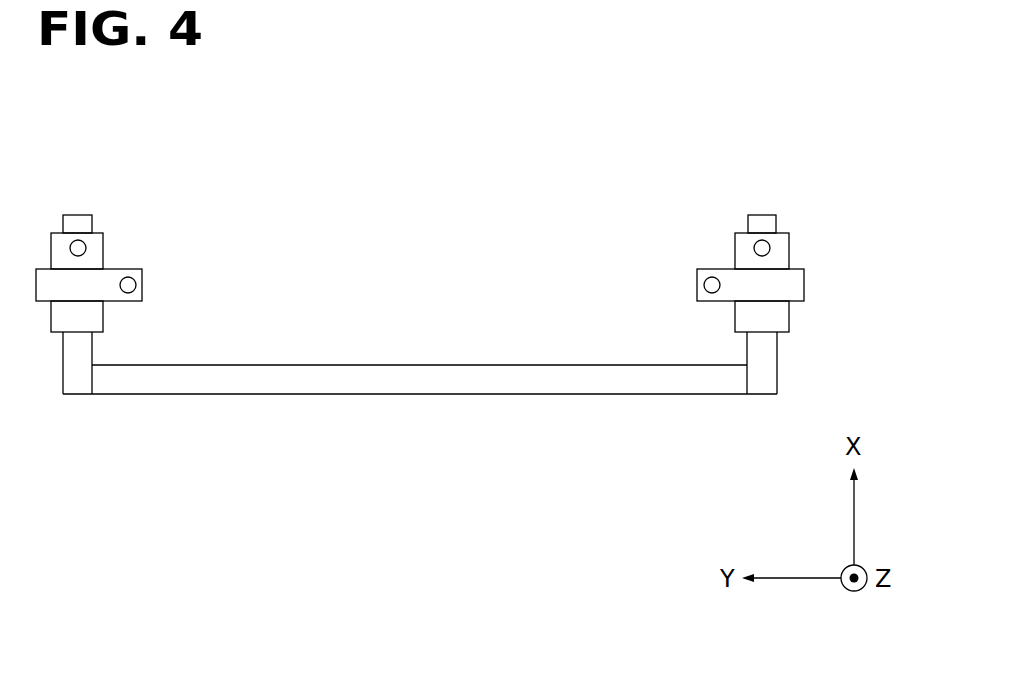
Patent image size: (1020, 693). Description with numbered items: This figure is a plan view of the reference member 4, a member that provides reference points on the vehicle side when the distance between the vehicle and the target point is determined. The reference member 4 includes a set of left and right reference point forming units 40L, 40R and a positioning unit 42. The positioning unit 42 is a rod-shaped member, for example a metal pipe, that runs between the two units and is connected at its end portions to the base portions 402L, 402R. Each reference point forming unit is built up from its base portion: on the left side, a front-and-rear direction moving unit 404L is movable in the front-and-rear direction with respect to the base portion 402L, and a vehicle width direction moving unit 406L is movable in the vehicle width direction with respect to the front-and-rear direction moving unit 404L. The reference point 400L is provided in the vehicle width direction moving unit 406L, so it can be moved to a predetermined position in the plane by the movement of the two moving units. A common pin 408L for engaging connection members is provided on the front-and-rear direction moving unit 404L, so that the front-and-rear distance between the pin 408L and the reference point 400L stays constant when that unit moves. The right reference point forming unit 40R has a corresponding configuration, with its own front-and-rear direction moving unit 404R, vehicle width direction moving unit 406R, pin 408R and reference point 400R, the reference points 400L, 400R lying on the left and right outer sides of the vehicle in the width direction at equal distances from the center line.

The reference member 4 is at (115, 455).
The positioning unit 42 is at (485, 393).
The reference point forming unit 40L is at (220, 170).
The reference point forming unit 40R is at (583, 178).
The base portion 402L is at (77, 213).
The base portion 402R is at (765, 215).
The front-and-rear direction moving unit 404L is at (105, 253).
The front-and-rear direction moving unit 404R is at (735, 253).
The pin 408L is at (85, 242).
The pin 408R is at (755, 242).
The reference point 400L is at (142, 275).
The reference point 400R is at (697, 280).
The vehicle width direction moving unit 406L is at (120, 302).
The vehicle width direction moving unit 406R is at (722, 302).